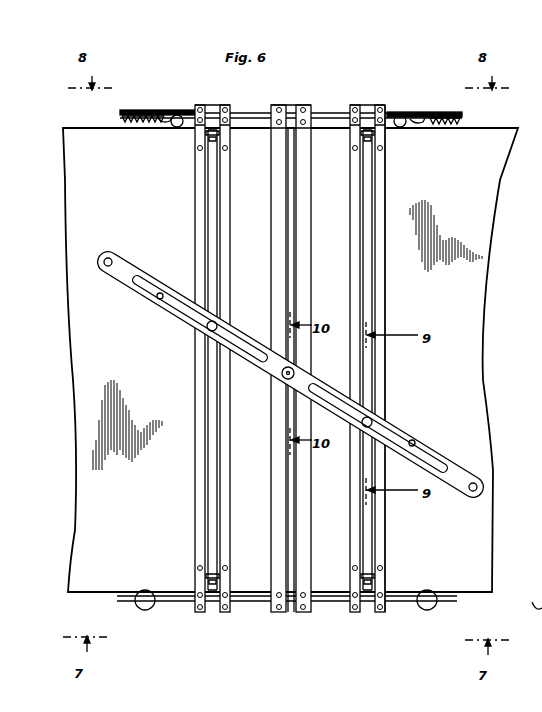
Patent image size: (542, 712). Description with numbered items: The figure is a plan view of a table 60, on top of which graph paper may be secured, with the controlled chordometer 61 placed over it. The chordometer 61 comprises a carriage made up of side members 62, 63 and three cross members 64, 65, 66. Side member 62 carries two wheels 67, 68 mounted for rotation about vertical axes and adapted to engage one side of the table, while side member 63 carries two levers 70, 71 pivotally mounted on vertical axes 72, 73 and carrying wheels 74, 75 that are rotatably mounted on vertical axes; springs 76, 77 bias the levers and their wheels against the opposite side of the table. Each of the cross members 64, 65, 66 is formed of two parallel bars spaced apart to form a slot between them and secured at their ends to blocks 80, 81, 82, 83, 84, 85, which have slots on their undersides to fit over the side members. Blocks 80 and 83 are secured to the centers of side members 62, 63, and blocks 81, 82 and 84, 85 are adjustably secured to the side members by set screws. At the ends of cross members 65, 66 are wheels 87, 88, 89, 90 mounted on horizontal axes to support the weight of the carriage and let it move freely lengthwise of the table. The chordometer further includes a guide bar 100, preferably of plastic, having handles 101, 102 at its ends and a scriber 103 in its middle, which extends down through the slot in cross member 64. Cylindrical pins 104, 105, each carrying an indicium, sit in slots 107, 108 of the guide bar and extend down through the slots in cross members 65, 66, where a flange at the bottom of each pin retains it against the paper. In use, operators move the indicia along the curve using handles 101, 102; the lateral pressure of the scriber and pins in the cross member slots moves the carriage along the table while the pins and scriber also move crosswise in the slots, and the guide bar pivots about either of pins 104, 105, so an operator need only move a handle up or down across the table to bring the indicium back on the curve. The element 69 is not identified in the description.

The table 60 is at (480, 216).
The controlled chordometer 61 is at (388, 289).
The side member 62 is at (245, 603).
The side member 63 is at (255, 113).
The cross member 64 is at (272, 520).
The cross member 65 is at (196, 490).
The cross member 66 is at (385, 525).
The wheel 67 is at (145, 610).
The wheel 68 is at (422, 608).
The frame member 69 is at (534, 597).
The lever 70 is at (165, 124).
The lever 71 is at (420, 125).
The vertical axis 72 is at (150, 110).
The vertical axis 73 is at (432, 112).
The wheel 74 is at (178, 128).
The wheel 75 is at (398, 128).
The spring 76 is at (135, 124).
The spring 77 is at (445, 125).
The block 80 is at (288, 614).
The block 81 is at (360, 614).
The block 82 is at (212, 614).
The block 83 is at (295, 105).
The block 84 is at (212, 105).
The block 85 is at (372, 105).
The wheel 87 is at (216, 137).
The wheel 88 is at (365, 137).
The wheel 89 is at (210, 580).
The wheel 90 is at (366, 582).
The guide bar 100 is at (455, 462).
The handle 101 is at (478, 487).
The handle 102 is at (104, 262).
The scriber 103 is at (298, 373).
The cylindrical pin 104 is at (210, 331).
The cylindrical pin 105 is at (385, 412).
The slot 107 is at (150, 285).
The slot 108 is at (416, 438).